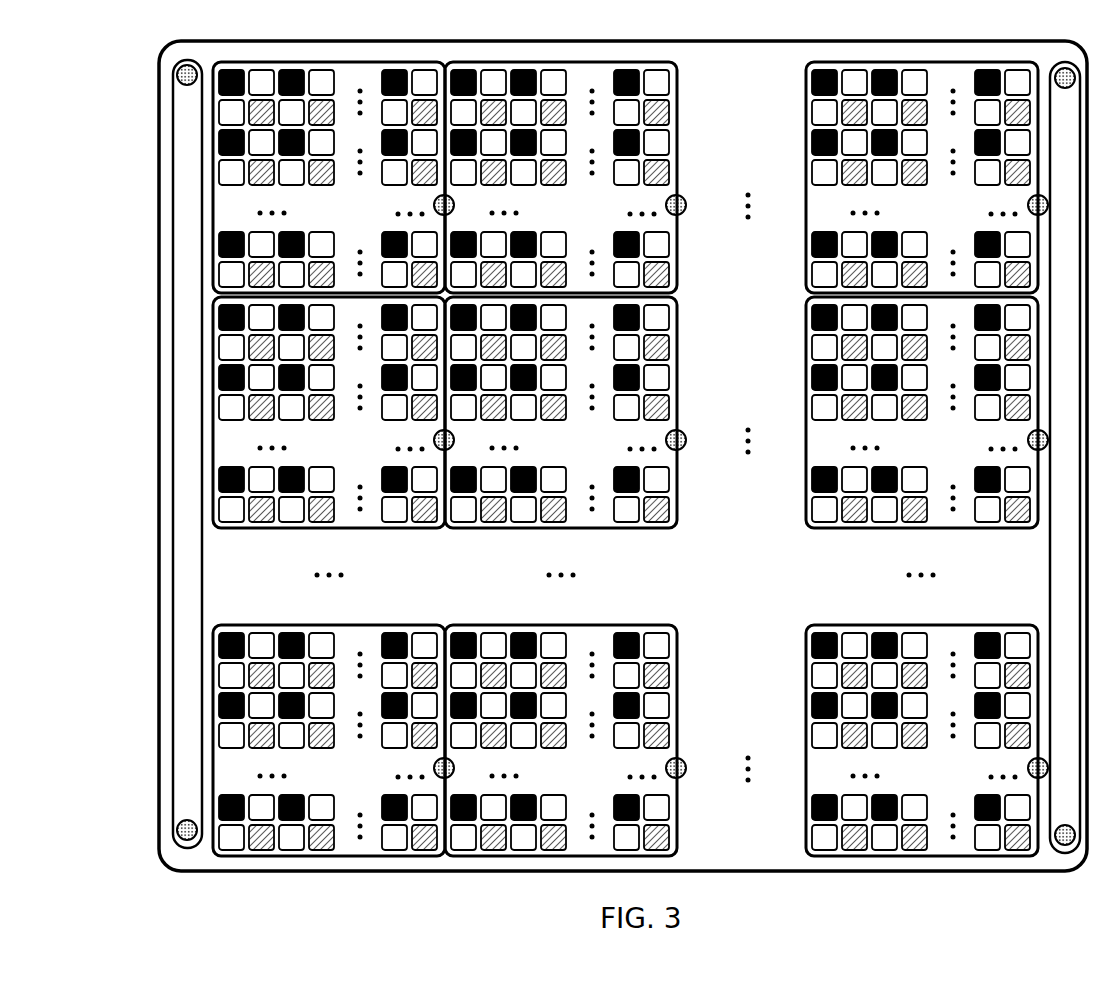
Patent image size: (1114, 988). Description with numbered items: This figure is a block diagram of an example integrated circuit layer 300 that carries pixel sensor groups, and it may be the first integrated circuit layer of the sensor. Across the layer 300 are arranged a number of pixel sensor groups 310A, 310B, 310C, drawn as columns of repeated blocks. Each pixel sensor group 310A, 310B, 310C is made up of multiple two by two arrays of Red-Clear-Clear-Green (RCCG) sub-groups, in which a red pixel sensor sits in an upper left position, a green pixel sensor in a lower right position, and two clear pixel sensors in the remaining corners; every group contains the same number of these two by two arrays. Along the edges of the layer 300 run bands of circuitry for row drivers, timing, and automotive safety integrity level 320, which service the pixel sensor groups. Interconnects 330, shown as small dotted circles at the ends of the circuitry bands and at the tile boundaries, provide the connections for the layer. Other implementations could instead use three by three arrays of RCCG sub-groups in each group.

The integrated circuit layer 300 is at (86, 71).
The pixel sensor group 310A is at (332, 62).
The pixel sensor group 310B is at (565, 63).
The pixel sensor group 310C is at (933, 62).
The circuitry for row drivers, timing, and automotive safety integrity level 320 is at (173, 193).
The interconnects 330 is at (178, 830).